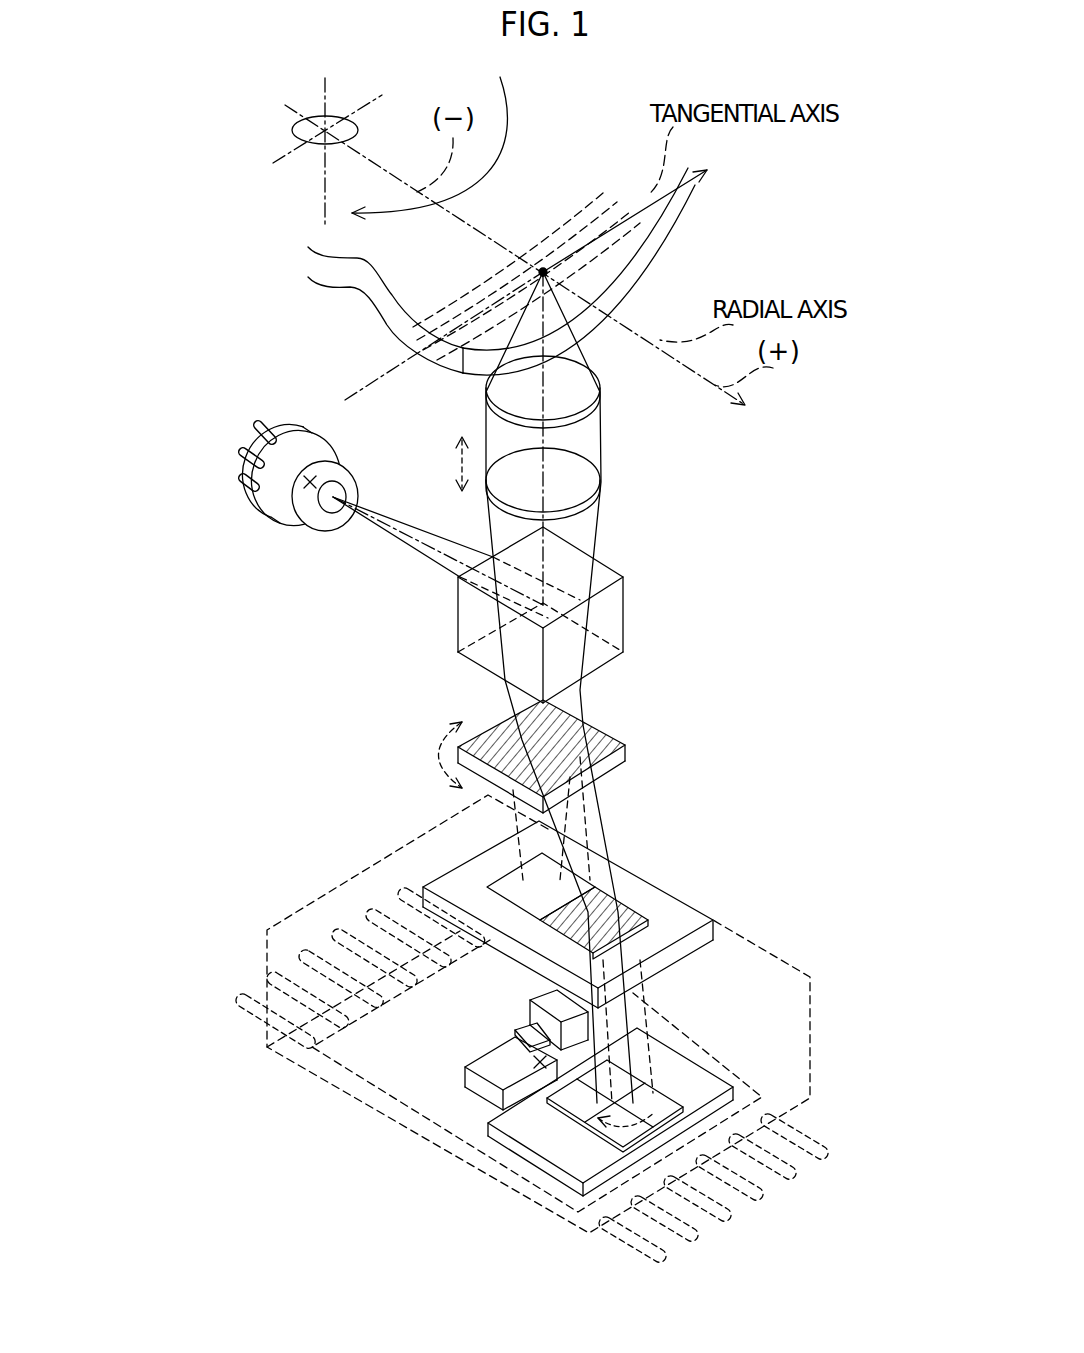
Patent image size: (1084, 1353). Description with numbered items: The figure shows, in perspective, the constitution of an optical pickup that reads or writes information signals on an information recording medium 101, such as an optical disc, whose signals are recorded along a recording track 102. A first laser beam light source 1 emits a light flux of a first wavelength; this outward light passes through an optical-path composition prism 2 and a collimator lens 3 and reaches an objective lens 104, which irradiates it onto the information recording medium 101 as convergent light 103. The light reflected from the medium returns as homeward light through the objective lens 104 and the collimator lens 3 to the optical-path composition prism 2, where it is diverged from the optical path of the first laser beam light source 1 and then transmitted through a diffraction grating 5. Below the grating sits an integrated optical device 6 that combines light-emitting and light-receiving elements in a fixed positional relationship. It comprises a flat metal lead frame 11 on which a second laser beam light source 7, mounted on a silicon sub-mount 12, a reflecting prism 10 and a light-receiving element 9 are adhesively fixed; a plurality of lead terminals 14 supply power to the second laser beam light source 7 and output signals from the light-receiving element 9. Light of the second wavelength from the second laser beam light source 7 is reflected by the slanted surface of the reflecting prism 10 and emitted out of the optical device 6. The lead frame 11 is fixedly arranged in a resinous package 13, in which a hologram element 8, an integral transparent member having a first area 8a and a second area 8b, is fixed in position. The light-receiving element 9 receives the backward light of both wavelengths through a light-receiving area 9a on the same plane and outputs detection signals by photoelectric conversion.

The first laser beam light source 1 is at (318, 523).
The optical-path composition prism 2 is at (600, 625).
The collimator lens 3 is at (598, 486).
The diffraction grating 5 is at (600, 750).
The optical device 6 is at (516, 1030).
The second laser beam light source 7 is at (520, 1040).
The hologram element 8 is at (560, 893).
The first area 8a is at (590, 880).
The second area 8b is at (650, 905).
The light-receiving element 9 is at (575, 1140).
The light-receiving area 9a is at (590, 1095).
The reflecting prism 10 is at (553, 1013).
The lead frame 11 is at (365, 1075).
The sub-mount 12 is at (475, 1075).
The resinous package 13 is at (400, 1110).
The lead terminals 14 is at (240, 1003).
The information recording medium 101 is at (660, 236).
The recording track 102 is at (440, 318).
The convergent light 103 is at (540, 273).
The objective lens 104 is at (483, 388).